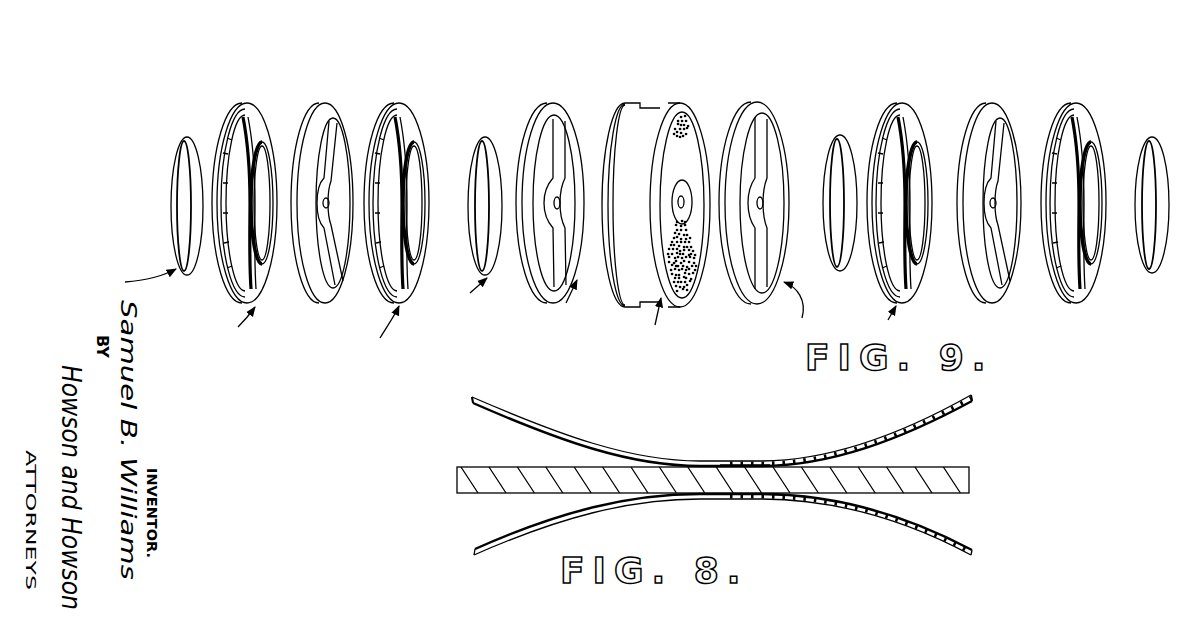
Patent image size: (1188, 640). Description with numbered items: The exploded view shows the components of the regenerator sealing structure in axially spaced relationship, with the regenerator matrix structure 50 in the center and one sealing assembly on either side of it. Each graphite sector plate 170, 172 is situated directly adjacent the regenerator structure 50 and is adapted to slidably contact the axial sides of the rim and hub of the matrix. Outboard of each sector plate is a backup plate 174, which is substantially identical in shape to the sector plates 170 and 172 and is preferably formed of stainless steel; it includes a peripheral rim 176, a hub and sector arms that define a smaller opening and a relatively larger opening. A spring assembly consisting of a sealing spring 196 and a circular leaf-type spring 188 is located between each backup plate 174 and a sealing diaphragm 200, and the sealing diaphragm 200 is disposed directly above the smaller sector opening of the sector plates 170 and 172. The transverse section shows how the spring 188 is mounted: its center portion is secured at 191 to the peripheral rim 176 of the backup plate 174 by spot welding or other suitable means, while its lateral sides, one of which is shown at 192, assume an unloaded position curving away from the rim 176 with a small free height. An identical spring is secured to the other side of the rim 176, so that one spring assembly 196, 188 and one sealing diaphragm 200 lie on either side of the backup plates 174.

In FIG. 9, the matrix structure 50 is at (645, 106).
In FIG. 9, the sector plate 170 is at (762, 105).
In FIG. 9, the sector plate 172 is at (588, 88).
In FIG. 9, the backup plate 174 is at (318, 105).
In FIG. 8, the peripheral rim 176 is at (947, 467).
In FIG. 9, the spring 188 is at (236, 116).
In FIG. 8, the spring 188 is at (572, 416).
In FIG. 8, the center portion securing location 191 is at (728, 466).
In FIG. 8, the lateral side 192 is at (484, 393).
In FIG. 9, the sealing spring 196 is at (250, 130).
In FIG. 9, the sealing diaphragm 200 is at (182, 138).